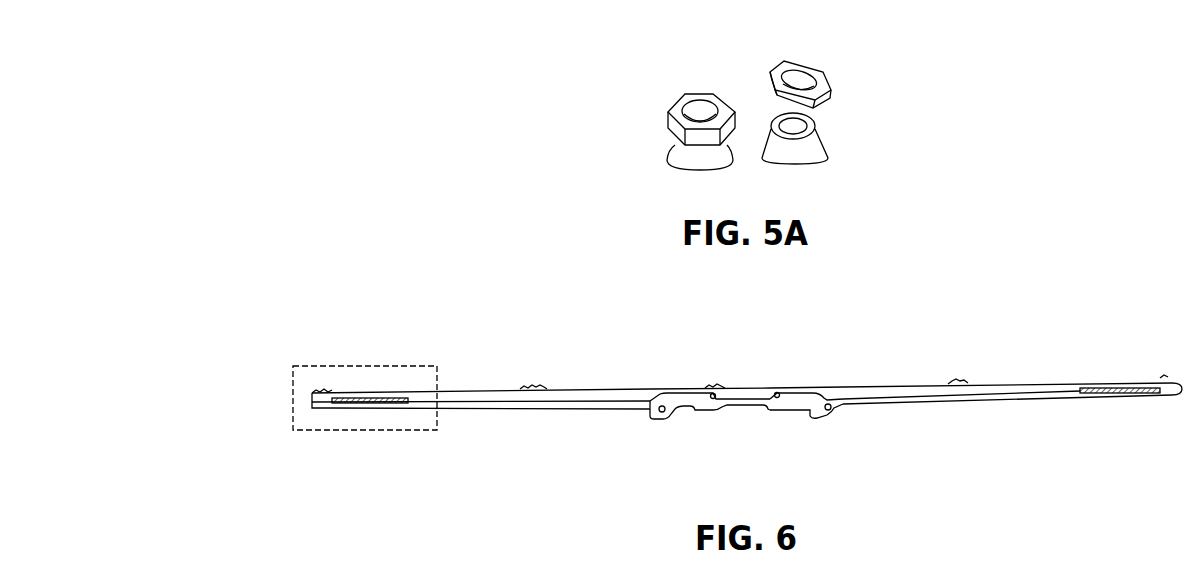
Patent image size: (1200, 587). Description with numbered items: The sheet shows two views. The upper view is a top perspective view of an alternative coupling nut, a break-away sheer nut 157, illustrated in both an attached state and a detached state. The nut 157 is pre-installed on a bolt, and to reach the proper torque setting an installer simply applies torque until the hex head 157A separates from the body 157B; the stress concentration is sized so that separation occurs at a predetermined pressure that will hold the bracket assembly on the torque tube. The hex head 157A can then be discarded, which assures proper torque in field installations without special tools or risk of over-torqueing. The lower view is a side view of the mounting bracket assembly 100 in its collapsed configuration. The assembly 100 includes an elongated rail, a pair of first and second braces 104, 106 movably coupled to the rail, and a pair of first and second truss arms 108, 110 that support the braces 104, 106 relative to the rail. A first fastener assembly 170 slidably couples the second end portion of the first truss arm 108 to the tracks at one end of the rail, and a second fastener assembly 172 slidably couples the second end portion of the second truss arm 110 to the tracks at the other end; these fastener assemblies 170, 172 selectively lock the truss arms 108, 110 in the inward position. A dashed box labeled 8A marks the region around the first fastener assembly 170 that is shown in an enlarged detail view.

In FIG. 5A, the nut 157 is at (643, 74).
In FIG. 5A, the hex head 157A is at (713, 92).
In FIG. 5A, the body 157B is at (677, 157).
In FIG. 6, the mounting bracket assembly 100 is at (397, 332).
In FIG. 6, the detail region 8A is at (312, 366).
In FIG. 6, the first fastener assembly 170 is at (338, 408).
In FIG. 6, the first truss arm 108 is at (593, 410).
In FIG. 6, the first brace 104 is at (693, 413).
In FIG. 6, the second brace 106 is at (807, 400).
In FIG. 6, the second truss arm 110 is at (910, 405).
In FIG. 6, the second fastener assembly 172 is at (1152, 395).